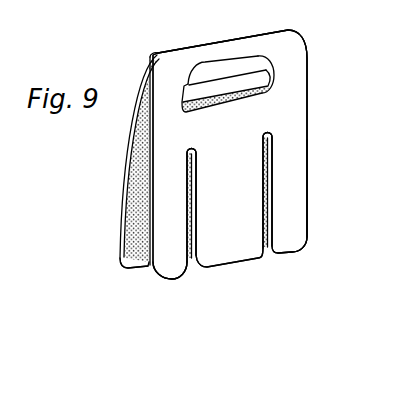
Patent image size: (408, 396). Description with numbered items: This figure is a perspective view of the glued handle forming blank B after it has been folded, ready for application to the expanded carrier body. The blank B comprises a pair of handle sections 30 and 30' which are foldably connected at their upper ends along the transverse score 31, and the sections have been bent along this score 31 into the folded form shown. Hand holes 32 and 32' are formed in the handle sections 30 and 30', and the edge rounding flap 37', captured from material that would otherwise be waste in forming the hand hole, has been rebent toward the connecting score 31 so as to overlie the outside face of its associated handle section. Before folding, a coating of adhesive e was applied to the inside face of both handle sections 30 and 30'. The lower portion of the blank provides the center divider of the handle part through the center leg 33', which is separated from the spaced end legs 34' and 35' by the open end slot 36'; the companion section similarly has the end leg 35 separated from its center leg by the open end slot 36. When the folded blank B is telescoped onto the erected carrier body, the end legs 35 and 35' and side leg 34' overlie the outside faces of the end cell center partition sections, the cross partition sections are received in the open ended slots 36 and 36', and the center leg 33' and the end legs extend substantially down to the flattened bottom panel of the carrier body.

The handle forming blank B is at (305, 34).
The handle section 30 is at (125, 160).
The handle section 30' is at (320, 133).
The transverse score 31 is at (180, 30).
The hand hole 32 is at (301, 65).
The hand hole 32' is at (265, 84).
The center leg 33' is at (230, 154).
The end leg 34' is at (315, 196).
The end leg 35 is at (113, 249).
The end leg 35' is at (169, 281).
The open end slot 36 is at (207, 206).
The open end slot 36' is at (306, 191).
The edge rounding flap 37' is at (229, 46).
The adhesive e is at (137, 203).